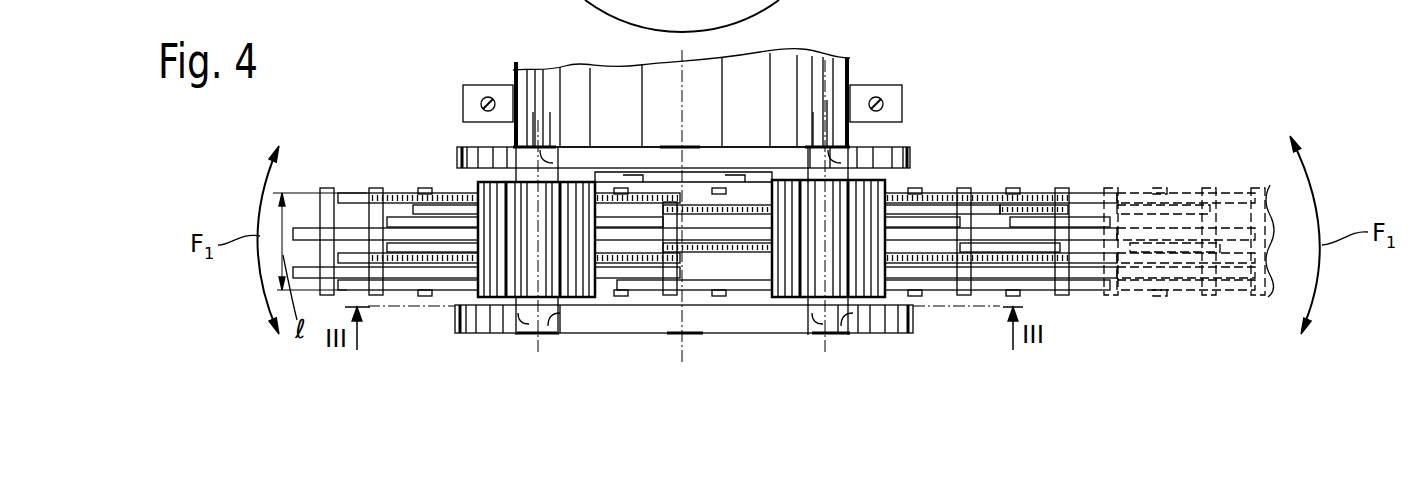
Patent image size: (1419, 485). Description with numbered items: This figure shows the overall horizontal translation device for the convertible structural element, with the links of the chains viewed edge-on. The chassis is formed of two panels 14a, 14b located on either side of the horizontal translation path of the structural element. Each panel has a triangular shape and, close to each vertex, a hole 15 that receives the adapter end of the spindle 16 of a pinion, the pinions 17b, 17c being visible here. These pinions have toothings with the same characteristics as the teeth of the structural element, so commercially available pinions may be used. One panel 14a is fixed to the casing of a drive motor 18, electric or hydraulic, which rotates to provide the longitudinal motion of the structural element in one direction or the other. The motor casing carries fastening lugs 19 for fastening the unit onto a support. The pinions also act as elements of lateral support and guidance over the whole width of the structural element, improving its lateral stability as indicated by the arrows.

The panel 14a is at (905, 148).
The panel 14b is at (918, 335).
The hole 15 is at (542, 147).
The spindle 16 is at (568, 337).
The pinion 17b is at (873, 202).
The pinion 17c is at (493, 212).
The drive motor 18 is at (830, 80).
The fastening lugs 19 is at (476, 95).